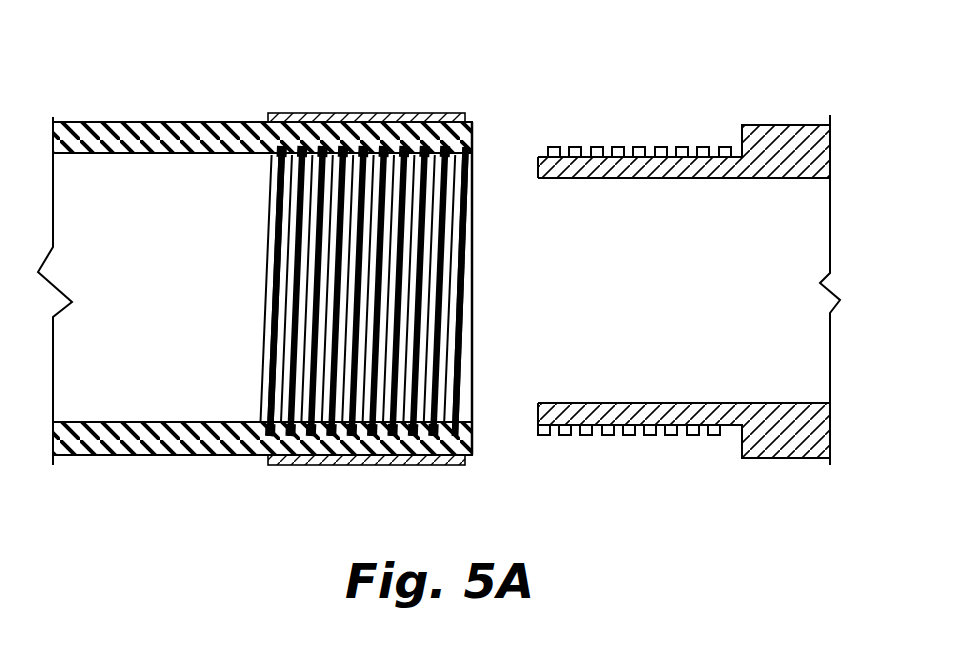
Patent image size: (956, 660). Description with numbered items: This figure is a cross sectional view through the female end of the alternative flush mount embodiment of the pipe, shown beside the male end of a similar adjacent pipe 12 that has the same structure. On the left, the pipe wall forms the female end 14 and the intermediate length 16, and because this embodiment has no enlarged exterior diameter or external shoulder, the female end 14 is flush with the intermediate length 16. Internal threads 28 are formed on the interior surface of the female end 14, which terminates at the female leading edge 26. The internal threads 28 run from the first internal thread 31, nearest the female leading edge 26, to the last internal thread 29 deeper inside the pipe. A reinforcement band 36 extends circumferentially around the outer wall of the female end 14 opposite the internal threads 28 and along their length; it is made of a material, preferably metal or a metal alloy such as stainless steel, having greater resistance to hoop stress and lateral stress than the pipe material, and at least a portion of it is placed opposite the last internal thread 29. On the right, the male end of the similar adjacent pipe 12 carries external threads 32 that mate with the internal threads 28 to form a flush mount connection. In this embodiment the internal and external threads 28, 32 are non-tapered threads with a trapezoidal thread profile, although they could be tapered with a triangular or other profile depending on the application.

The similar adjacent pipe 12 is at (752, 78).
The female end 14 is at (262, 112).
The intermediate length 16 is at (103, 122).
The female leading edge 26 is at (473, 132).
The internal threads 28 is at (379, 289).
The last internal thread 29 is at (268, 299).
The first internal thread 31 is at (466, 322).
The external threads 32 is at (728, 135).
The reinforcement band 36 is at (314, 113).